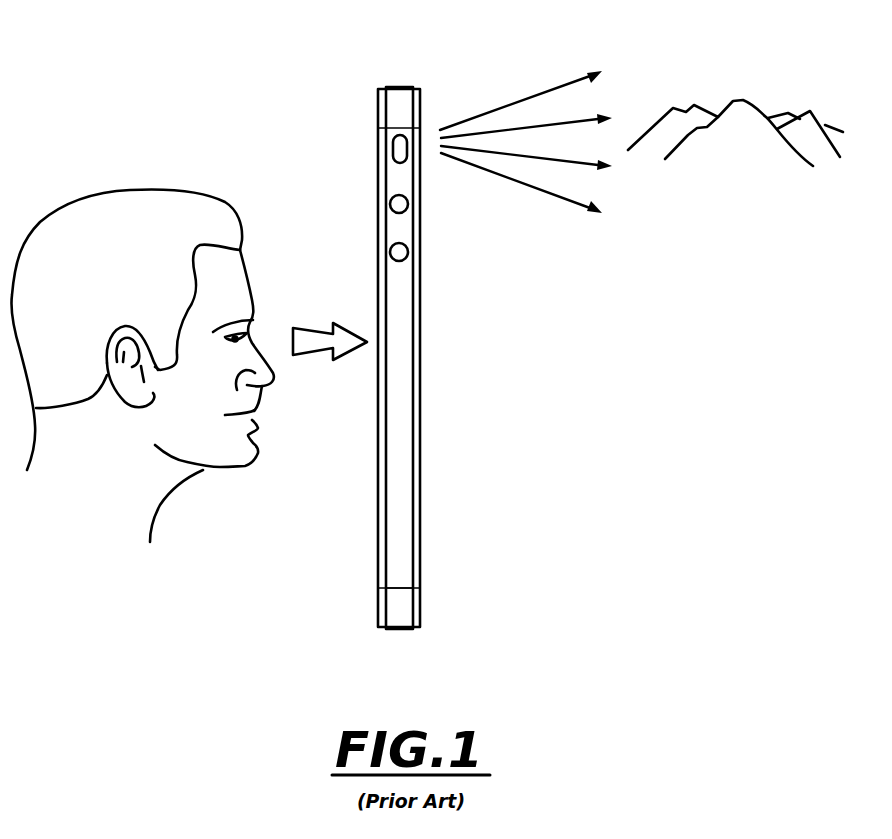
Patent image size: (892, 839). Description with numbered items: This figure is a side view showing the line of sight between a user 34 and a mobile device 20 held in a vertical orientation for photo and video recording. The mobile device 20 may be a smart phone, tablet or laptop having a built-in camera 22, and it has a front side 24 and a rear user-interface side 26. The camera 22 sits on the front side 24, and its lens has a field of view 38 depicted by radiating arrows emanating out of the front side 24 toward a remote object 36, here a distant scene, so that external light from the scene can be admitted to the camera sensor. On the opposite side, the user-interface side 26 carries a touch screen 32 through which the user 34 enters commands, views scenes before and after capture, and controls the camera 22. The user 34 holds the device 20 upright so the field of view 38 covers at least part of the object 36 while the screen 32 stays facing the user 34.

The mobile device 20 is at (370, 342).
The camera 22 is at (430, 123).
The front side 24 is at (421, 540).
The rear user-interface side 26 is at (377, 507).
The touch screen 32 is at (377, 559).
The user 34 is at (85, 182).
The remote object 36 is at (764, 78).
The field of view 38 is at (546, 90).